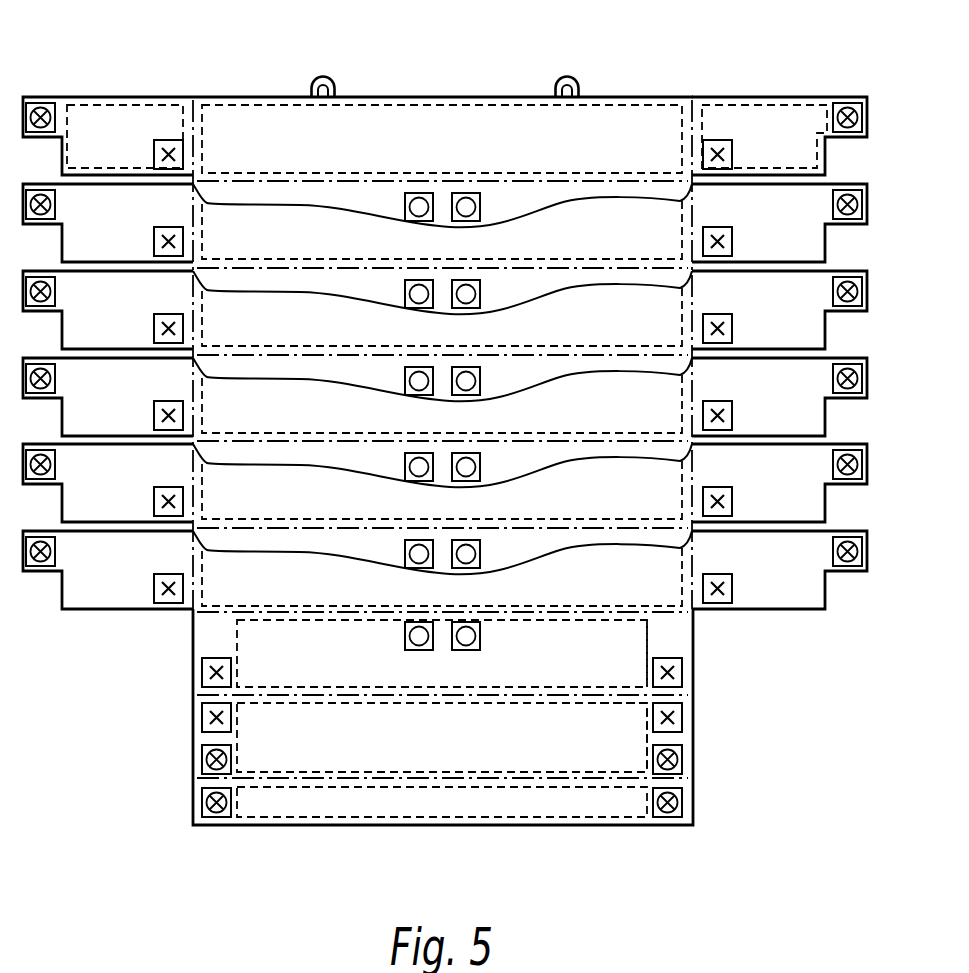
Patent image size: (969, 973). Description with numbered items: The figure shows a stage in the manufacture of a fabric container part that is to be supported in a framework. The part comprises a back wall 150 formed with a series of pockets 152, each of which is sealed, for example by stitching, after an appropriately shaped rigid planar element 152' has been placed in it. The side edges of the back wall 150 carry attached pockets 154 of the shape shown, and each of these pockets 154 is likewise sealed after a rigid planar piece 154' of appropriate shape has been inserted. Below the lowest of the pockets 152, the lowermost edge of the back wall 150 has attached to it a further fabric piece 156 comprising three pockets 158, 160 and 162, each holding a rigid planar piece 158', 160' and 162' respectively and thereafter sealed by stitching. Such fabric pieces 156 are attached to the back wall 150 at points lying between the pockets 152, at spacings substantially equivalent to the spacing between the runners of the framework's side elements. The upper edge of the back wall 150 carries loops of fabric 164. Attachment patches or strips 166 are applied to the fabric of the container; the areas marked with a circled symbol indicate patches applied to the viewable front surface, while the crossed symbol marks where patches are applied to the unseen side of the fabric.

The back wall 150 is at (445, 466).
The pockets 152 is at (442, 363).
The rigid planar element 152' is at (442, 107).
The attached pockets 154 is at (445, 353).
The rigid planar piece 154' is at (442, 105).
The fabric piece 156 is at (612, 206).
The pocket 158 is at (442, 653).
The rigid planar piece 158' is at (699, 653).
The pocket 160 is at (442, 737).
The rigid planar element 160' is at (607, 795).
The pocket 162 is at (442, 837).
The rigid planar piece 162' is at (278, 839).
The loops of fabric 164 is at (338, 84).
The attachment patches 166 is at (833, 374).